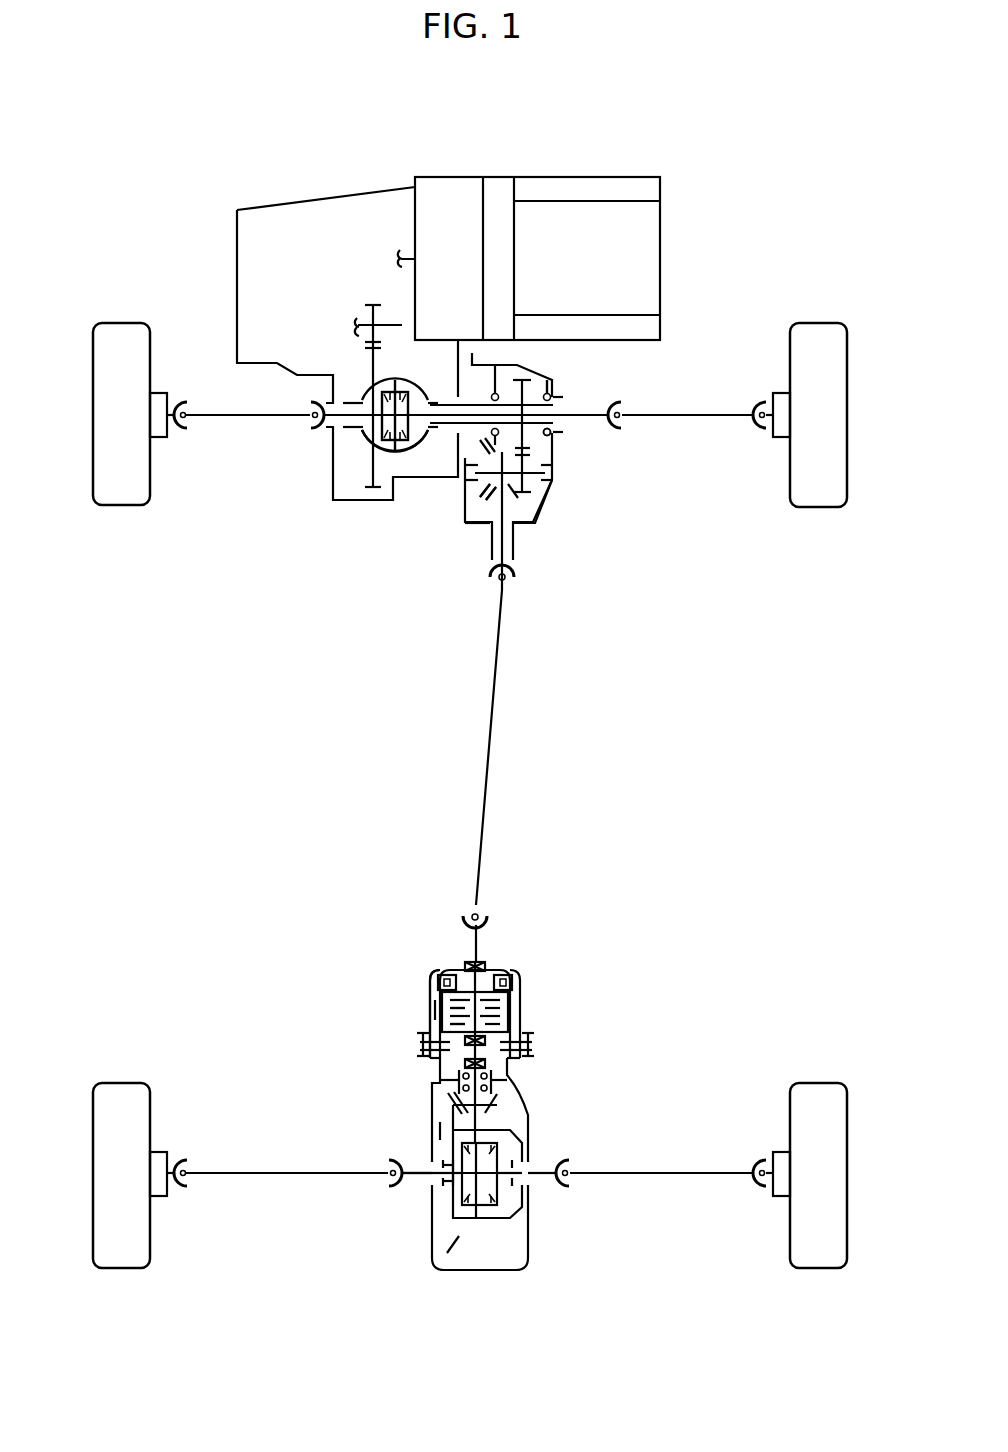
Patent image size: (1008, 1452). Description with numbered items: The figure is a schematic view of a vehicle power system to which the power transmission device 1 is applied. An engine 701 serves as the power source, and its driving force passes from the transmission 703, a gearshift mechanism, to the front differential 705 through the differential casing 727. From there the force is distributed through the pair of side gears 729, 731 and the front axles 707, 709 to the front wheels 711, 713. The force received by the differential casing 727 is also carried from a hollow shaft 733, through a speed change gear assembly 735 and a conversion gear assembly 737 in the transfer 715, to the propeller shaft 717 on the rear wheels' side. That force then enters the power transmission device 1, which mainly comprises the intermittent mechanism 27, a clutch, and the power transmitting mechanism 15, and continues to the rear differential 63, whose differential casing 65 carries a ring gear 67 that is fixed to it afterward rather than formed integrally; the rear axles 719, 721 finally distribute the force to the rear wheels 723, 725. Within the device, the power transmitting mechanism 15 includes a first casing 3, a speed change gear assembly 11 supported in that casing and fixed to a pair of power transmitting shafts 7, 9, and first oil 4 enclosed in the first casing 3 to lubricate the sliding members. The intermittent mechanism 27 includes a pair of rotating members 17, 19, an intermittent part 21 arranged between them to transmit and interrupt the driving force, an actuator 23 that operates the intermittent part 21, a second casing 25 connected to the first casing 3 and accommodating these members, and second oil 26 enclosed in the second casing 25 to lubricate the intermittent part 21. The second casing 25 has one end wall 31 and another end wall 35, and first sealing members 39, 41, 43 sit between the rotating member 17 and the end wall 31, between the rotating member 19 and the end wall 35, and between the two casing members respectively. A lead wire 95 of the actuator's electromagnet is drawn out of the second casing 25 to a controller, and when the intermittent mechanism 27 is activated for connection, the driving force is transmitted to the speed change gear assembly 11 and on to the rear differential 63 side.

The power transmission device 1 is at (665, 897).
The first casing 3 is at (516, 1071).
The first oil 4 is at (440, 1135).
The power transmitting shaft 7 is at (492, 1082).
The power transmitting shaft 9 is at (403, 1180).
The speed change gear assembly 11 is at (440, 1103).
The power transmitting mechanism 15 is at (417, 1122).
The rotating member 17 is at (430, 995).
The rotating member 19 is at (455, 1021).
The intermittent part 21 is at (506, 1008).
The actuator 23 is at (430, 964).
The second casing 25 is at (427, 1005).
The second oil 26 is at (440, 1010).
The intermittent mechanism 27 is at (629, 994).
The end wall 31 is at (462, 969).
The end wall 35 is at (520, 1046).
The first sealing member 39 is at (473, 960).
The first sealing member 41 is at (488, 1043).
The first sealing member 43 is at (440, 1065).
The rear differential 63 is at (502, 1234).
The differential casing 65 is at (524, 1195).
The ring gear 67 is at (454, 1257).
The lead wire 95 is at (502, 970).
The engine 701 is at (605, 184).
The transmission 703 is at (315, 193).
The front differential 705 is at (391, 460).
The front axle 707 is at (236, 418).
The front axle 709 is at (698, 418).
The front wheel 711 is at (116, 330).
The front wheel 713 is at (812, 330).
The transfer 715 is at (558, 511).
The propeller shaft 717 is at (491, 766).
The rear axle 719 is at (240, 1178).
The rear axle 721 is at (673, 1178).
The rear wheel 723 is at (122, 1089).
The rear wheel 725 is at (814, 1089).
The differential casing 727 is at (417, 384).
The side gear 729 is at (364, 434).
The side gear 731 is at (421, 441).
The hollow shaft 733 is at (530, 392).
The speed change gear assembly 735 is at (556, 451).
The conversion gear assembly 737 is at (478, 510).